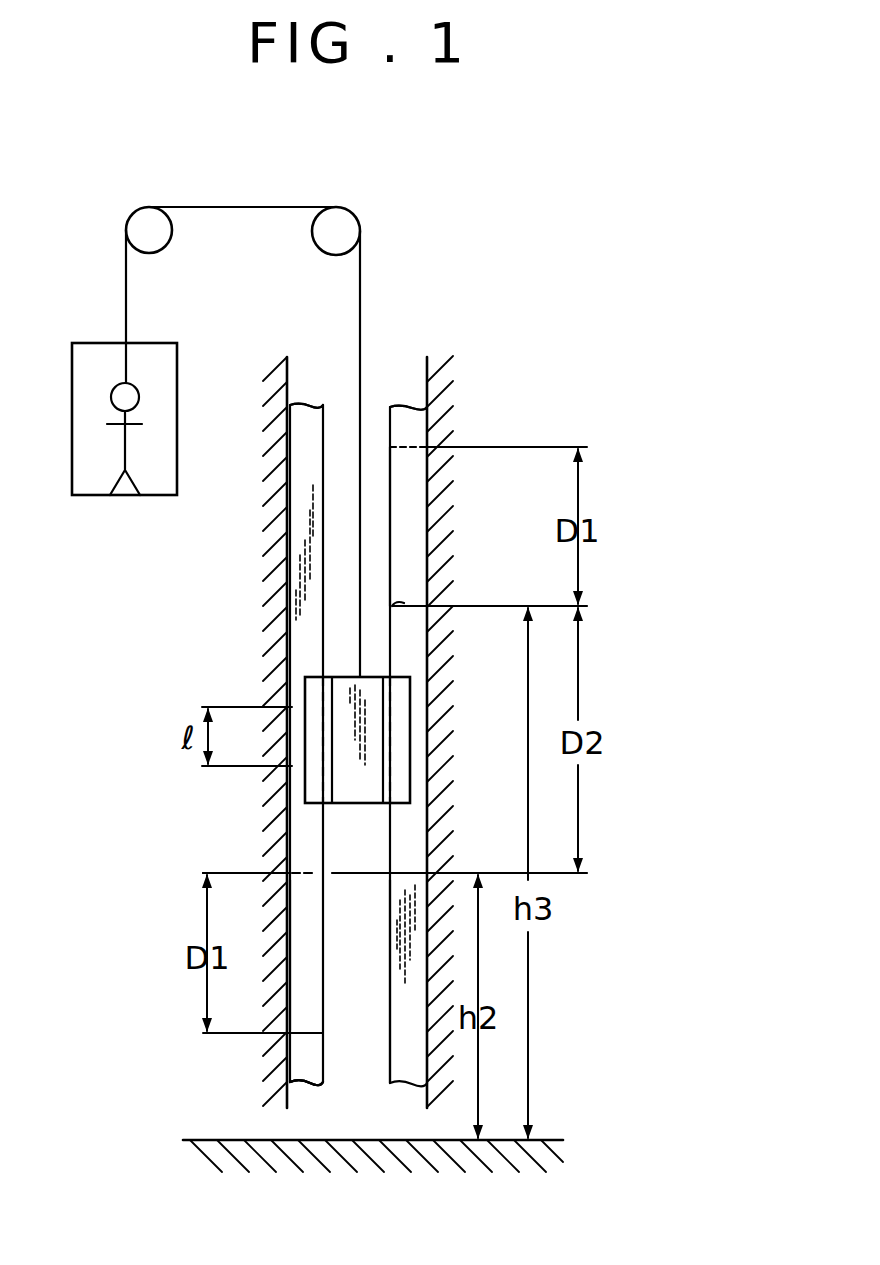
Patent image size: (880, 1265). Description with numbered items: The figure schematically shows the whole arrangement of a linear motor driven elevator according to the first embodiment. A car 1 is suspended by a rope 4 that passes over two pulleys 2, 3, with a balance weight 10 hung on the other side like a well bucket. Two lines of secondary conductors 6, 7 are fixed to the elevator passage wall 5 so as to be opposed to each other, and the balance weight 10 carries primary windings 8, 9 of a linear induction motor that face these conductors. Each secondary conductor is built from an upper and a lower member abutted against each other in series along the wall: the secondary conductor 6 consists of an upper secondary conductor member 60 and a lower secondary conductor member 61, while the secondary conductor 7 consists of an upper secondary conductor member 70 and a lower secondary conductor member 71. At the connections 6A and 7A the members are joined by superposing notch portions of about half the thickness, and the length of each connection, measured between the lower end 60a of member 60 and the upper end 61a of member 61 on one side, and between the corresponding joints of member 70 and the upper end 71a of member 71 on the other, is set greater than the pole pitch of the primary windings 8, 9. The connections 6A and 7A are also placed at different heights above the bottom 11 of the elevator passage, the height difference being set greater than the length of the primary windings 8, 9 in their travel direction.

The car 1 is at (72, 411).
The pulley 2 is at (142, 212).
The pulley 3 is at (361, 222).
The rope 4 is at (362, 301).
The elevator passage wall 5 is at (421, 541).
The secondary conductor 6 is at (404, 405).
The upper secondary conductor member 60 is at (431, 424).
The lower end (joint) of upper secondary conductor member 60a is at (400, 603).
The lower secondary conductor member 61 is at (395, 988).
The upper end (joint) of lower secondary conductor member 61a is at (436, 451).
The connection 6A is at (412, 511).
The secondary conductor 7 is at (295, 405).
The upper secondary conductor member 70 is at (296, 477).
The lower secondary conductor member 71 is at (309, 1086).
The upper end (joint) of lower secondary conductor member 71a is at (313, 871).
The connection 7A is at (304, 944).
The primary winding 8 is at (405, 777).
The primary winding 9 is at (312, 677).
The balance weight 10 is at (362, 803).
The bottom of the elevator passage 11 is at (517, 1138).